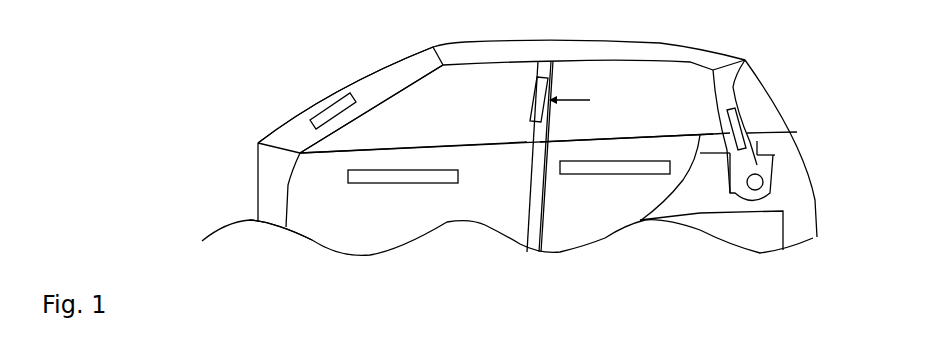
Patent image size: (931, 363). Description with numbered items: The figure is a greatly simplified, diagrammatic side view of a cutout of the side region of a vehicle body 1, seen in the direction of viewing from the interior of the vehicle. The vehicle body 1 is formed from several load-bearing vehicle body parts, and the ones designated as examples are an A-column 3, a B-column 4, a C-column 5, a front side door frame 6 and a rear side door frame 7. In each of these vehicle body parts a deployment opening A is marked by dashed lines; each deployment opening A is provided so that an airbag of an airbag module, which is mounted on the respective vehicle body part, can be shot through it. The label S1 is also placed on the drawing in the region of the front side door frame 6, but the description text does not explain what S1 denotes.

The vehicle body 1 is at (218, 88).
The A-column 3 is at (384, 78).
The B-column 4 is at (545, 70).
The C-column 5 is at (723, 88).
The front side door frame 6 is at (373, 222).
The rear side door frame 7 is at (570, 232).
The front fender surface region S1 is at (286, 213).
The deployment opening A is at (318, 106).